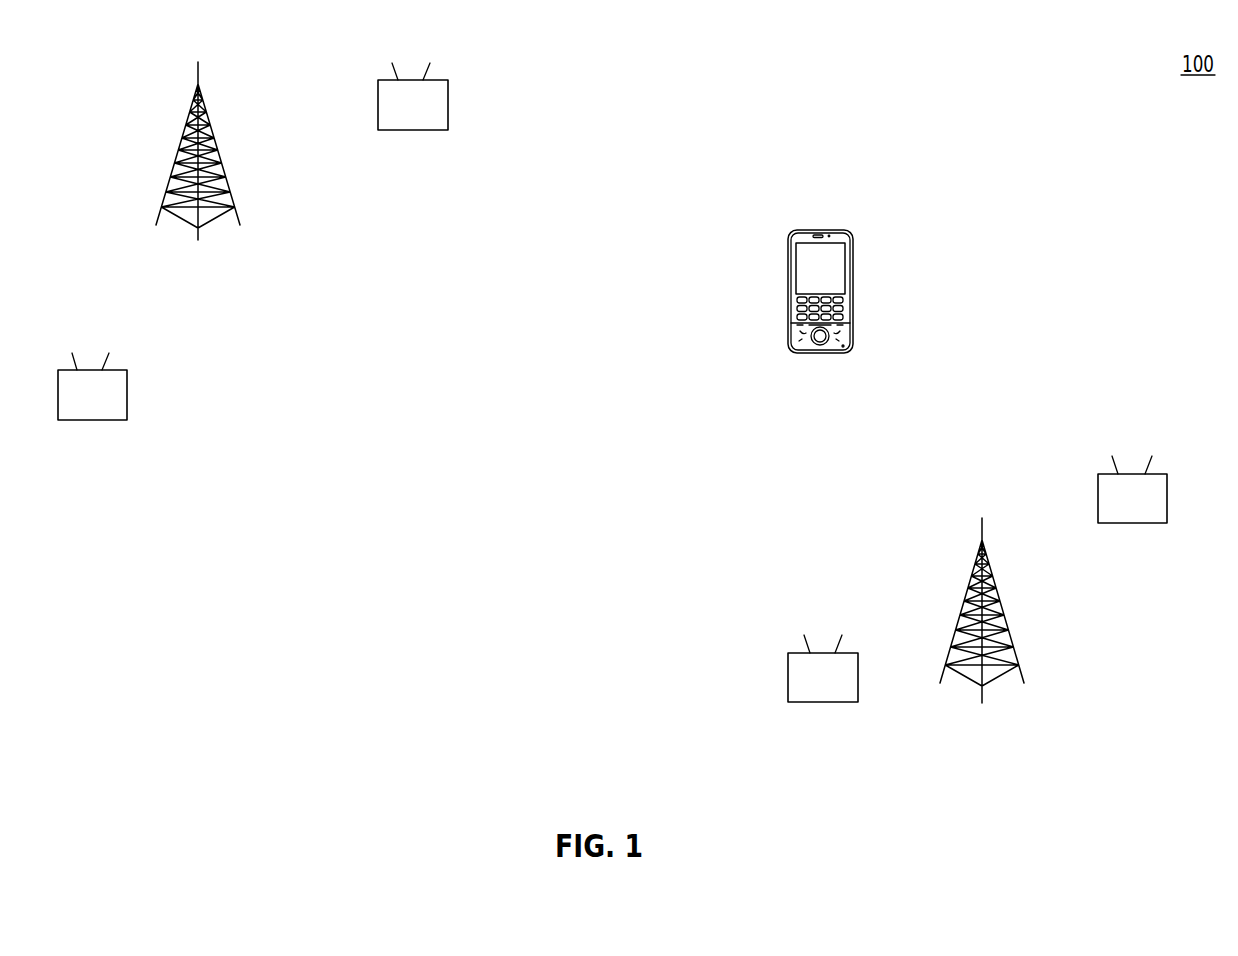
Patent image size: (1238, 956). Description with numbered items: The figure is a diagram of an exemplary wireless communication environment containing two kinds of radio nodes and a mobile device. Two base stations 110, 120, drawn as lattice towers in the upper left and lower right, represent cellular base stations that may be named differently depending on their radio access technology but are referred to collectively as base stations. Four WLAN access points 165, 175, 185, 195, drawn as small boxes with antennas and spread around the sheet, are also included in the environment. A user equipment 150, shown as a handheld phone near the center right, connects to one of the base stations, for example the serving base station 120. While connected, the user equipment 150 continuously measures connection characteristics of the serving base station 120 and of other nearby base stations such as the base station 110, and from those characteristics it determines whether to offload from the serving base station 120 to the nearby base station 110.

The base station 110 is at (218, 140).
The base station 120 is at (1000, 597).
The user equipment 150 is at (853, 275).
The WLAN access point 165 is at (127, 393).
The WLAN access point 175 is at (448, 103).
The WLAN access point 185 is at (788, 680).
The WLAN access point 195 is at (1098, 497).